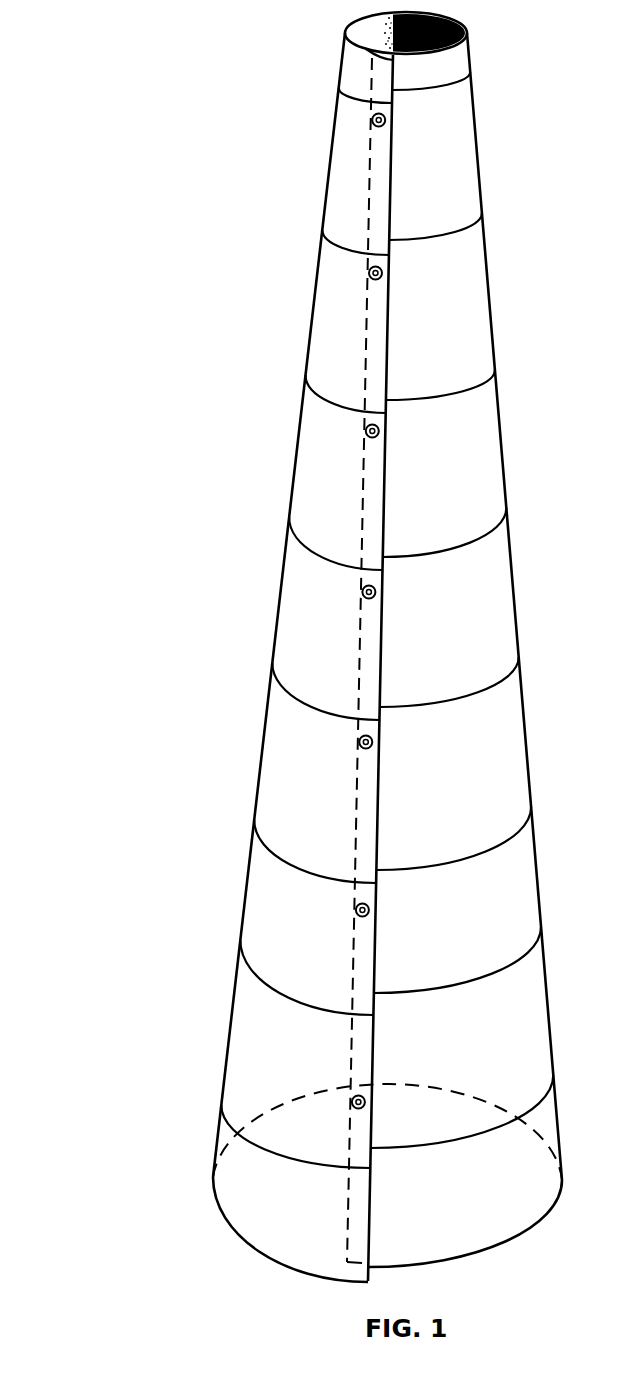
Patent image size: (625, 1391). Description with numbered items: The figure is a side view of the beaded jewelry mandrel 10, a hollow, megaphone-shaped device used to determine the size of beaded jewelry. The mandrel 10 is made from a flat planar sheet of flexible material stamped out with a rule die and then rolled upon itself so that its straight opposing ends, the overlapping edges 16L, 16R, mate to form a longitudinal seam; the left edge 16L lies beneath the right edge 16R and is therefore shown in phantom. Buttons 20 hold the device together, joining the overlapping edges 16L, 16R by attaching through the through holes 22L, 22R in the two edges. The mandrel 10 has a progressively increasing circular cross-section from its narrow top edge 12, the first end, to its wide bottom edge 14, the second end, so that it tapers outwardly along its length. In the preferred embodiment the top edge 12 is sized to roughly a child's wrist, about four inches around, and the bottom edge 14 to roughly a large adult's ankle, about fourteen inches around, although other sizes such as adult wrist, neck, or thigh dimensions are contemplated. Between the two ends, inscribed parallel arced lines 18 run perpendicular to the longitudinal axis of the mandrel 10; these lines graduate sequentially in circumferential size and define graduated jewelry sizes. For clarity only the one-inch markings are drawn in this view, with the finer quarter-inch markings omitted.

The beaded jewelry mandrel 10 is at (354, 167).
The top edge 12 is at (345, 26).
The bottom edge 14 is at (290, 1264).
The straight overlapping edge 16R is at (383, 509).
The straight overlapping edge 16L is at (357, 636).
The inscribed parallel arced lines 18 is at (322, 397).
The buttons 20 is at (369, 273).
The through hole 22L is at (359, 740).
The through hole 22R is at (221, 740).